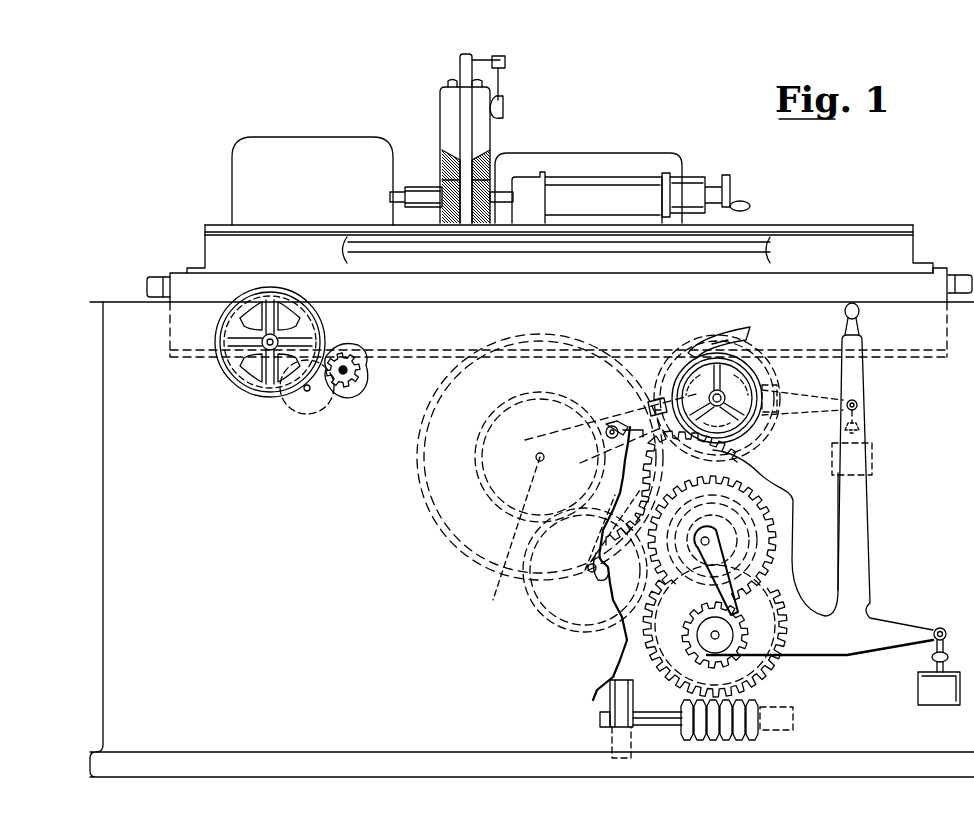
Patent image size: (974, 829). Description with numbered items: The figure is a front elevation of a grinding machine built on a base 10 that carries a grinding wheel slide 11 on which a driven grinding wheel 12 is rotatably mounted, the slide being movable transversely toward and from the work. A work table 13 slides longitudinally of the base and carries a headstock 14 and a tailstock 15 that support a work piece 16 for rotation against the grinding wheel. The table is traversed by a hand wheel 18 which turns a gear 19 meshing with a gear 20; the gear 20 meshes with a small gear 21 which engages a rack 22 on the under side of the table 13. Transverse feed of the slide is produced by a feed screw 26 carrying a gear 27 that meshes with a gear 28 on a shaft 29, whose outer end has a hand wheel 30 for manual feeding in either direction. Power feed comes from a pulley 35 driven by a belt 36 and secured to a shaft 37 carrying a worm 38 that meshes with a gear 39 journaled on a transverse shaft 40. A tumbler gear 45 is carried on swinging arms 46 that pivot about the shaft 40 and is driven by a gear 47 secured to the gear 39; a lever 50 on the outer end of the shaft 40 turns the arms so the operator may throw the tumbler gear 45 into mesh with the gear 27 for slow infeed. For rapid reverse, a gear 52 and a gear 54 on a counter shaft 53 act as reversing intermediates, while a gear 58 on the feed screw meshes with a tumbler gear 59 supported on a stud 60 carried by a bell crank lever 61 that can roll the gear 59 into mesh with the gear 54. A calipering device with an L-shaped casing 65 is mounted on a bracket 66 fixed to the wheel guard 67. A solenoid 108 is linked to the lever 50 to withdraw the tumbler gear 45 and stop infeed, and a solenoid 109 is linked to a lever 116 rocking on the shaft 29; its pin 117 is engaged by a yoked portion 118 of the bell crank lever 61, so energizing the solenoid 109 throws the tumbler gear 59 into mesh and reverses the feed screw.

The base 10 is at (117, 452).
The grinding wheel slide 11 is at (607, 167).
The grinding wheel 12 is at (448, 168).
The work table 13 is at (188, 285).
The headstock 14 is at (247, 165).
The tailstock 15 is at (637, 197).
The work piece 16 is at (448, 178).
The hand wheel 18 is at (272, 385).
The gear 19 is at (228, 377).
The gear 20 is at (317, 413).
The small gear 21 is at (353, 387).
The rack 22 is at (358, 347).
The feed screw 26 is at (537, 457).
The gear 27 is at (460, 545).
The gear 28 is at (743, 453).
The shaft 29 is at (743, 382).
The hand wheel 30 is at (677, 370).
The pulley 35 is at (610, 697).
The belt 36 is at (620, 712).
The shaft 37 is at (655, 713).
The worm 38 is at (767, 713).
The gear 39 is at (763, 687).
The transverse shaft 40 is at (720, 637).
The tumbler gear 45 is at (712, 538).
The swinging arms 46 is at (712, 548).
The gear 47 is at (740, 613).
The lever 50 is at (858, 495).
The gear 52 is at (730, 560).
The counter shaft 53 is at (747, 550).
The gear 54 is at (757, 522).
The gear 58 is at (485, 493).
The tumbler gear 59 is at (543, 607).
The stud 60 is at (593, 570).
The bell crank lever 61 is at (506, 537).
The L-shaped casing 65 is at (465, 127).
The bracket 66 is at (508, 87).
The wheel guard 67 is at (480, 132).
The solenoid 108 is at (922, 697).
The solenoid 109 is at (873, 458).
The lever 116 is at (813, 405).
The pin 117 is at (613, 423).
The yoked portion 118 is at (603, 430).